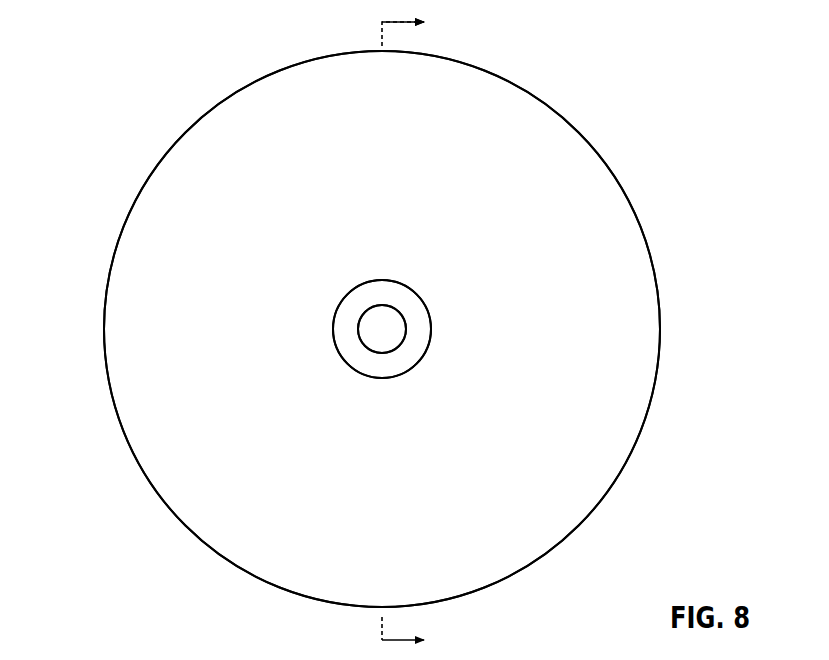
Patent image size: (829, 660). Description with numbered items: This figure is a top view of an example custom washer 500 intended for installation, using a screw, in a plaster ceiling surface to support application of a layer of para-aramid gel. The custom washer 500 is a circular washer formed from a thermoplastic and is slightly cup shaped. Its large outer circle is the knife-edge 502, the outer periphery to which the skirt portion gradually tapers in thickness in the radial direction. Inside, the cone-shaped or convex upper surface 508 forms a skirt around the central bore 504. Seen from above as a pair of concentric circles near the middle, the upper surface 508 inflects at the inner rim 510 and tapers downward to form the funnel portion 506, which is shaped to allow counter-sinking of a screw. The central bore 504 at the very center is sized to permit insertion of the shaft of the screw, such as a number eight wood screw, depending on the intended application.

The custom washer 500 is at (70, 276).
The knife-edge 502 is at (650, 252).
The central bore 504 is at (389, 321).
The funnel portion 506 is at (348, 313).
The upper surface 508 is at (549, 337).
The inner rim 510 is at (407, 371).